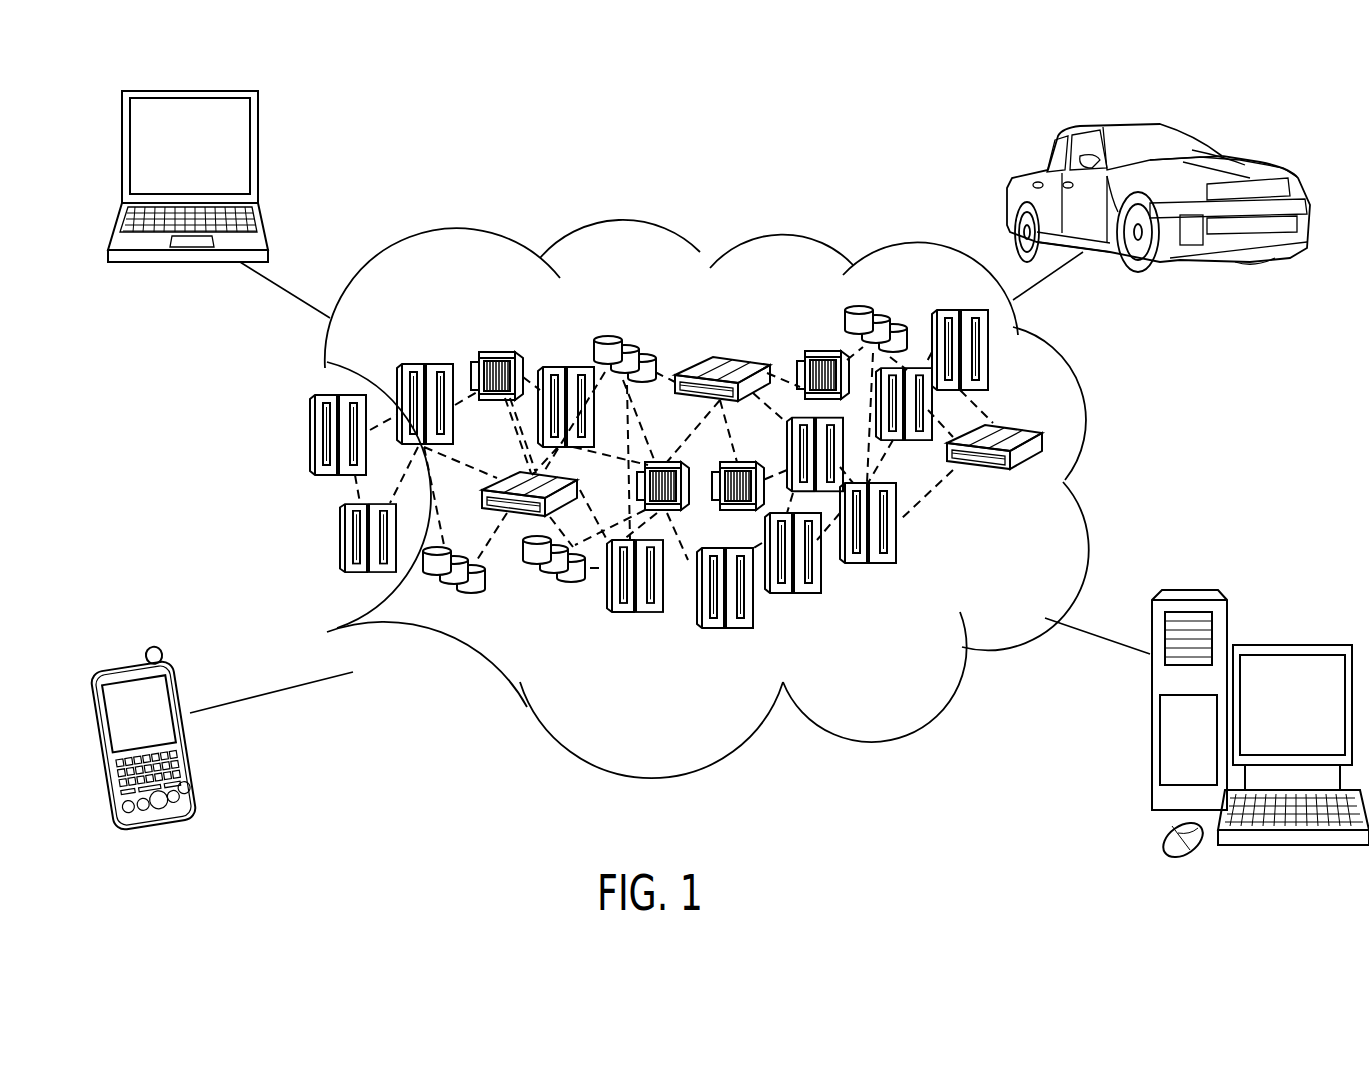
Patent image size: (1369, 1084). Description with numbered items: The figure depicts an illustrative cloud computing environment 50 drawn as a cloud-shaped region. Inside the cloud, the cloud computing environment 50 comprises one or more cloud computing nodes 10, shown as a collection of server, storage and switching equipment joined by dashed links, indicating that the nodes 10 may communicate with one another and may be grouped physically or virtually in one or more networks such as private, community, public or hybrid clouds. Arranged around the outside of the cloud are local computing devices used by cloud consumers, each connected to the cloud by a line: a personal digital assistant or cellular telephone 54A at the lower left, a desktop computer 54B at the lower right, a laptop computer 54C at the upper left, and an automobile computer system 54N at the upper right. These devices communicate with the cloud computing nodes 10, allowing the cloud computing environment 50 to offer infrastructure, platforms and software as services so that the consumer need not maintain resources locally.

The cloud computing nodes 10 is at (1072, 499).
The cloud computing environment 50 is at (1088, 404).
The personal digital assistant or cellular telephone 54A is at (98, 747).
The desktop computer 54B is at (1285, 645).
The laptop computer 54C is at (122, 152).
The automobile computer system 54N is at (1217, 153).